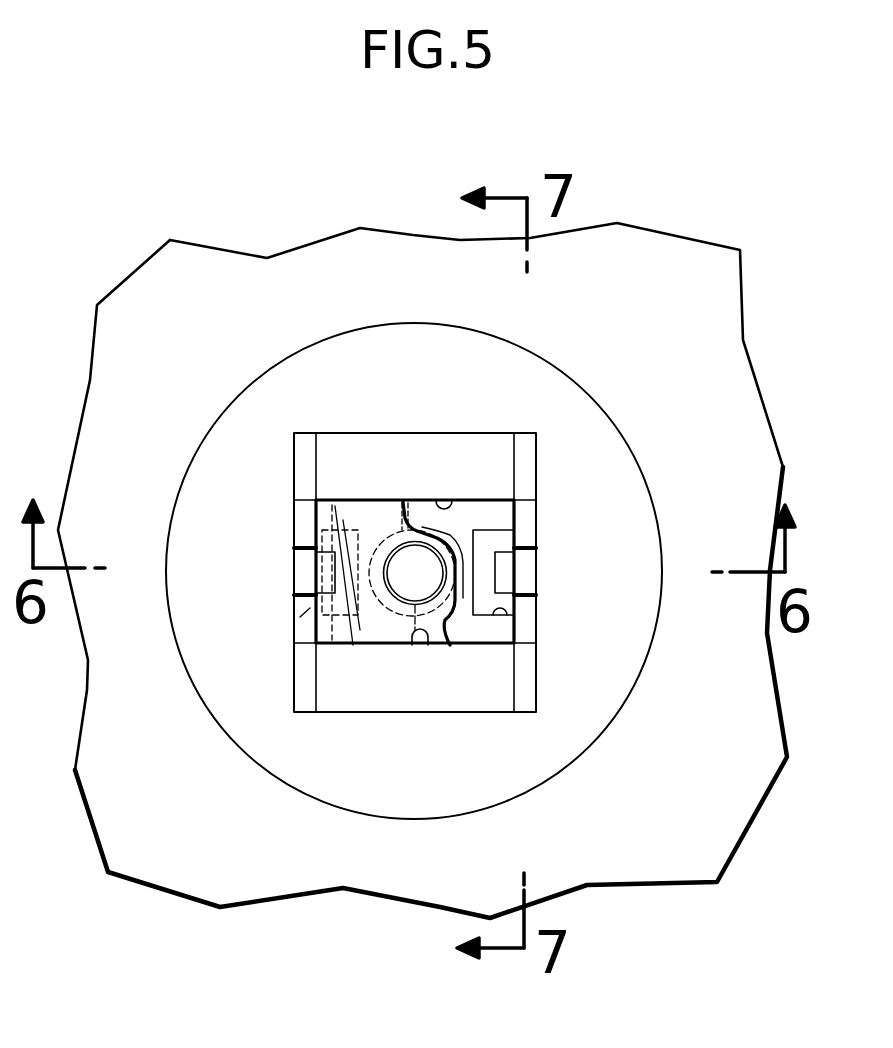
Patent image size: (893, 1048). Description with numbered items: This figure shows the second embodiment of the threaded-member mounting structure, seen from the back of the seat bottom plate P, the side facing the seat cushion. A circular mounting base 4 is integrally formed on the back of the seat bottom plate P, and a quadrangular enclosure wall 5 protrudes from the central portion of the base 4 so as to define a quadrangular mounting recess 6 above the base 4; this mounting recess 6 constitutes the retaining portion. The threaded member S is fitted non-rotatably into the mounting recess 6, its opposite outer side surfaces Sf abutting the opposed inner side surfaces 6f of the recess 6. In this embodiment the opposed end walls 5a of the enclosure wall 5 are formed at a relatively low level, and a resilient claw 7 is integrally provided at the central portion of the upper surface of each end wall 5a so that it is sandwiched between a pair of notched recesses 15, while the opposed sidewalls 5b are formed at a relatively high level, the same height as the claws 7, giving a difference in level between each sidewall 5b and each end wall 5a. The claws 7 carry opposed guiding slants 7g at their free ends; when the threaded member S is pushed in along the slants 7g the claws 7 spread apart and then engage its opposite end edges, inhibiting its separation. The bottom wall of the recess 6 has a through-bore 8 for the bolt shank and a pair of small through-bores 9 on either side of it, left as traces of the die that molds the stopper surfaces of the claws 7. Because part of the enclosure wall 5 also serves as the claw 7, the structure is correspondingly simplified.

The seat bottom plate P is at (150, 900).
The mounting base 4 is at (598, 403).
The enclosure wall 5 is at (443, 430).
The end walls 5a is at (302, 473).
The sidewalls 5b is at (373, 443).
The outer side surfaces Sf is at (358, 500).
The threaded member S is at (396, 494).
The mounting recess 6 is at (460, 628).
The inner side surfaces 6f is at (446, 505).
The resilient claws 7 is at (280, 560).
The guiding slants 7g is at (318, 580).
The notched recesses 15 is at (303, 607).
The through-bore 8 is at (353, 645).
The small through-bores 9 is at (310, 612).